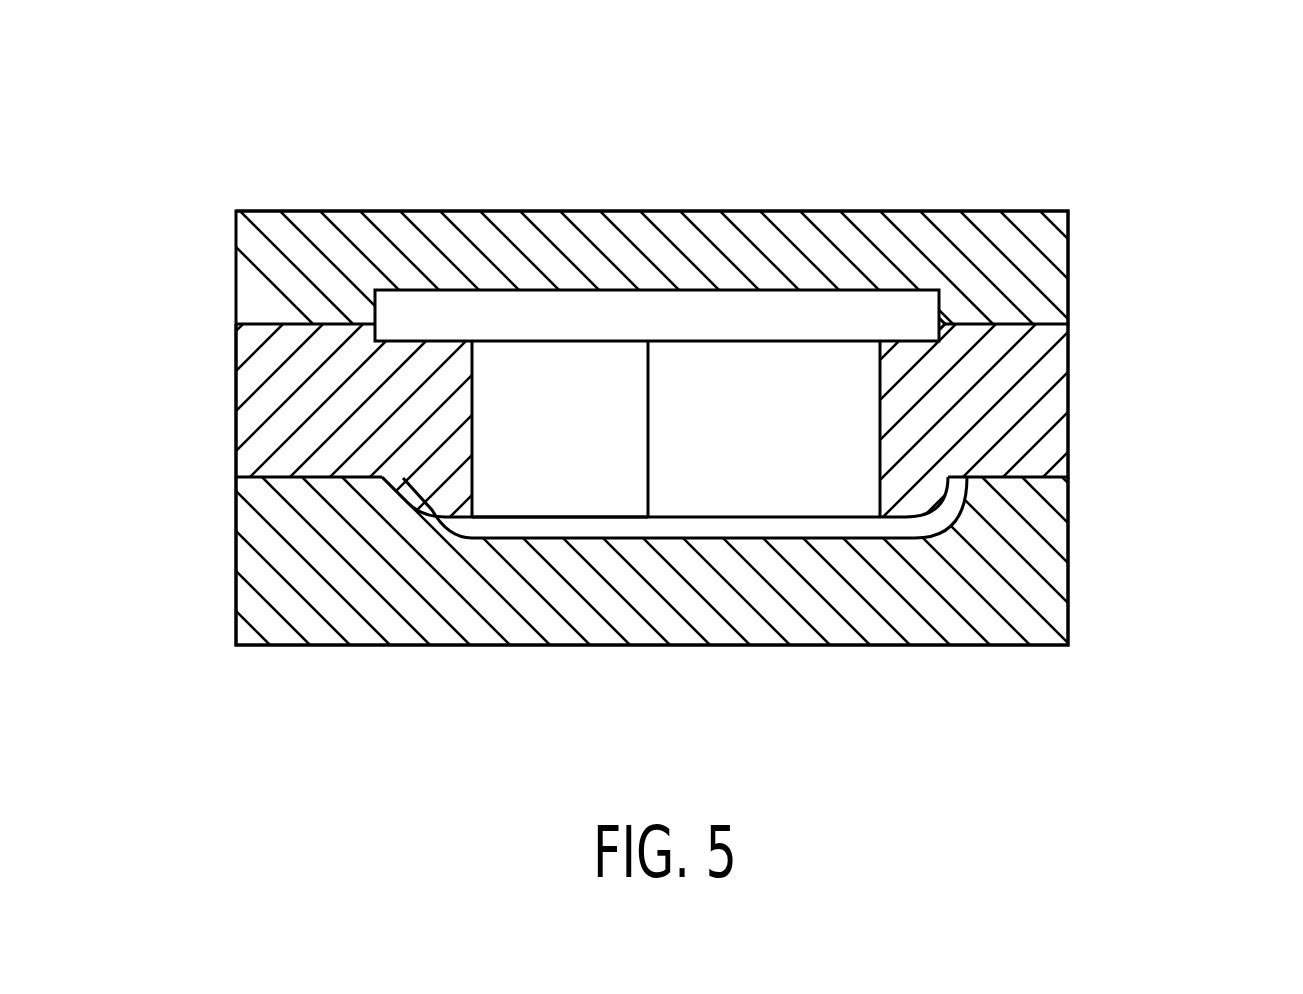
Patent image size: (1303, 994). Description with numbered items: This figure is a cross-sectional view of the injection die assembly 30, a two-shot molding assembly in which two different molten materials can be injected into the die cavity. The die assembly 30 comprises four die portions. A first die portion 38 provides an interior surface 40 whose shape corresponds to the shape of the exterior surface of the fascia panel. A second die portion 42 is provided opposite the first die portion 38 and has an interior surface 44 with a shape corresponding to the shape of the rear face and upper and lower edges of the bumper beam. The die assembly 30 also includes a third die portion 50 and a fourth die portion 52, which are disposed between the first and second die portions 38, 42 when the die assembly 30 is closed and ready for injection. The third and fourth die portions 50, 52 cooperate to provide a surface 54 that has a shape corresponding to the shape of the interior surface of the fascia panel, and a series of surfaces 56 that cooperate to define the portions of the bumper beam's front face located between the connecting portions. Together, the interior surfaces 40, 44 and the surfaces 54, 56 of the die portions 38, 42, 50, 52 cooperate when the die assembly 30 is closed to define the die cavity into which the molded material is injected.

The injection die assembly 30 is at (1180, 135).
The first die portion 38 is at (653, 613).
The interior surface 40 is at (818, 532).
The second die portion 42 is at (748, 218).
The interior surface 44 is at (782, 291).
The third die portion 50 is at (252, 401).
The fourth die portion 52 is at (1068, 395).
The surface 54 is at (517, 517).
The surfaces 56 is at (522, 343).